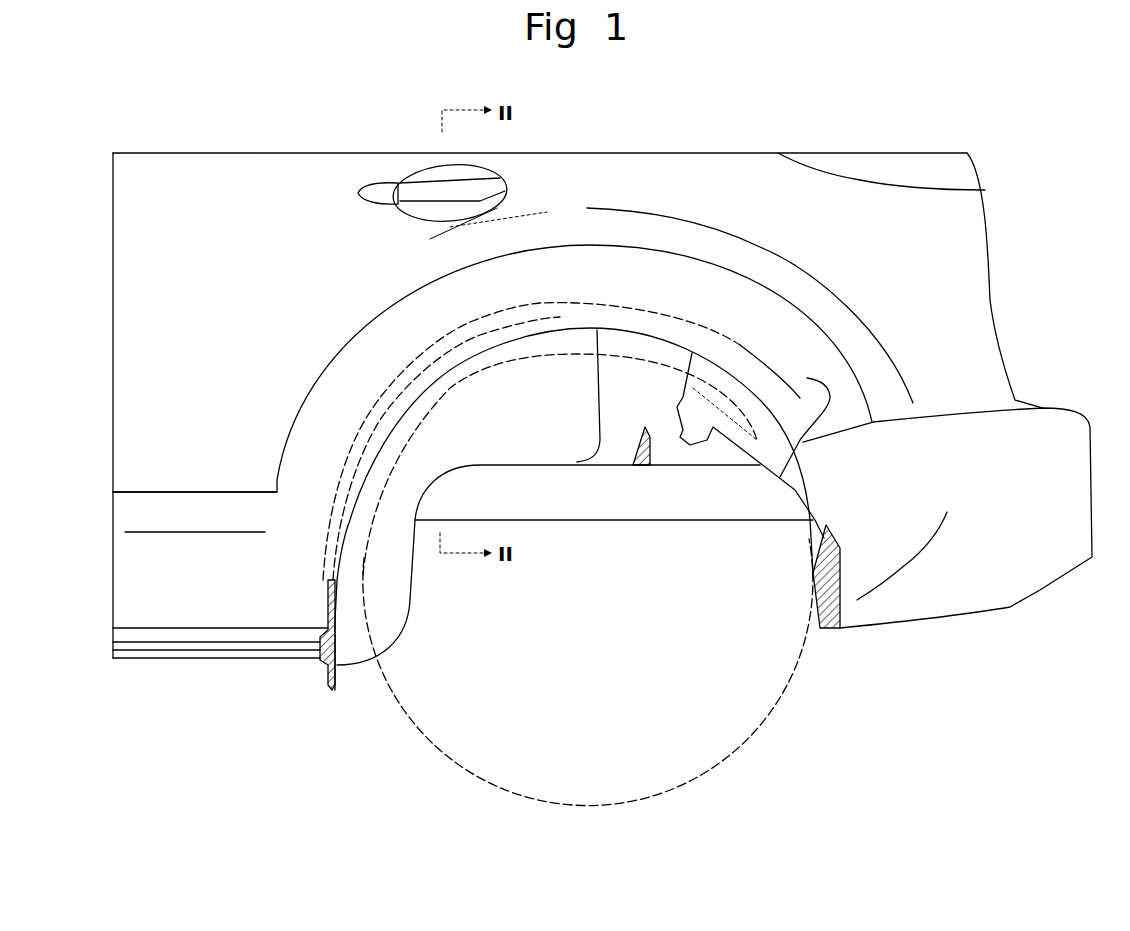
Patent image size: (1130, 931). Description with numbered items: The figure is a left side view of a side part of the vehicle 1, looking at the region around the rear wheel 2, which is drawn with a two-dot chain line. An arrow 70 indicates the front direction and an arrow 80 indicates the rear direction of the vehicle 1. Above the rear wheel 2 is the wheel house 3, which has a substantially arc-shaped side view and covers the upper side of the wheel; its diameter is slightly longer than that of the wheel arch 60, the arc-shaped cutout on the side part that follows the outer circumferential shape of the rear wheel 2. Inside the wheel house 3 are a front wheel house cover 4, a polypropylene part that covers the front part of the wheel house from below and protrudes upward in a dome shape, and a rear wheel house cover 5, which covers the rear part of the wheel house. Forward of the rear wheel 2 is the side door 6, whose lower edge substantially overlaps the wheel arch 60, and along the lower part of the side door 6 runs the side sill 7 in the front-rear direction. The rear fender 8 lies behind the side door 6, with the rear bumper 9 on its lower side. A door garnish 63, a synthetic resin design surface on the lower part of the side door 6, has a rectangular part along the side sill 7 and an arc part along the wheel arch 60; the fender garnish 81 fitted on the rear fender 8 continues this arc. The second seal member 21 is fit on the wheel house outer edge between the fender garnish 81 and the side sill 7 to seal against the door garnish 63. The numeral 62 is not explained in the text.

The vehicle 1 is at (1036, 137).
The rear wheel 2 is at (798, 688).
The wheel house 3 is at (627, 420).
The front wheel house cover 4 is at (397, 610).
The rear wheel house cover 5 is at (817, 520).
The side door 6 is at (224, 635).
The side sill 7 is at (170, 658).
The rear fender 8 is at (957, 227).
The rear bumper 9 is at (1043, 552).
The second seal member 21 is at (468, 332).
The wheel arch 60 is at (440, 378).
The side sill upper member 62 is at (250, 195).
The door garnish 63 is at (263, 588).
The arrow 70 is at (885, 93).
The arrow 80 is at (907, 92).
The fender garnish 81 is at (780, 477).